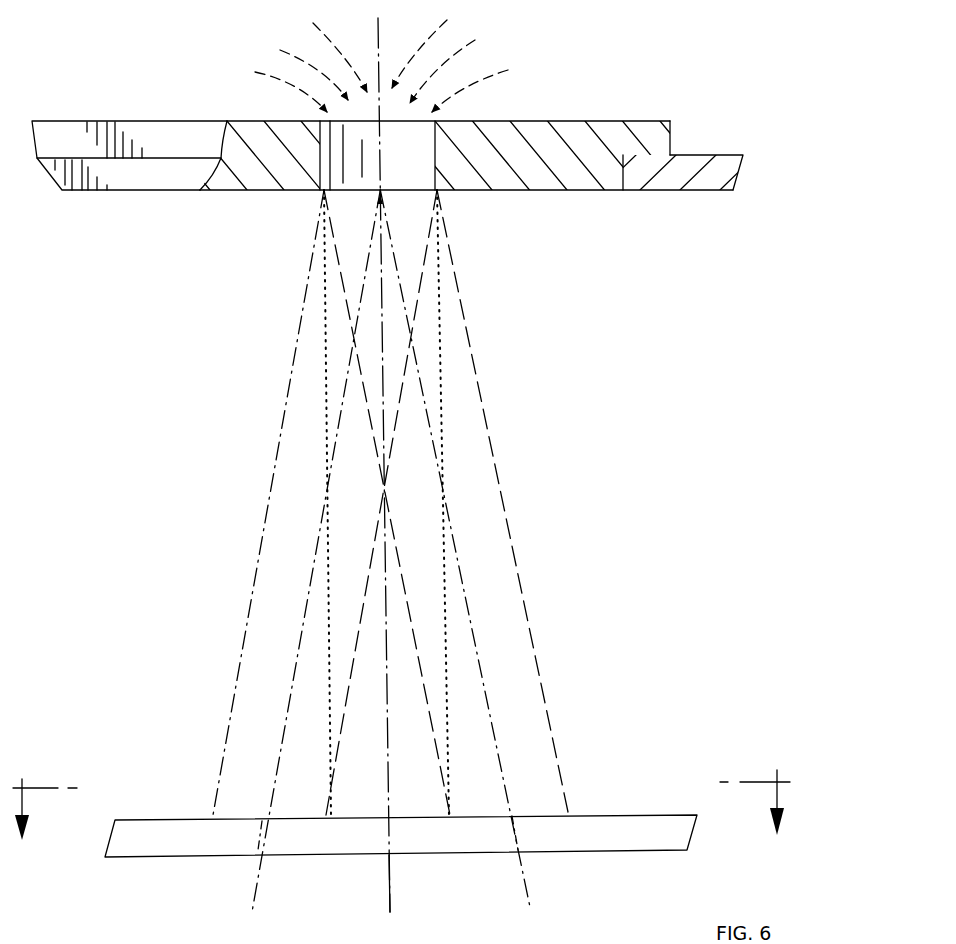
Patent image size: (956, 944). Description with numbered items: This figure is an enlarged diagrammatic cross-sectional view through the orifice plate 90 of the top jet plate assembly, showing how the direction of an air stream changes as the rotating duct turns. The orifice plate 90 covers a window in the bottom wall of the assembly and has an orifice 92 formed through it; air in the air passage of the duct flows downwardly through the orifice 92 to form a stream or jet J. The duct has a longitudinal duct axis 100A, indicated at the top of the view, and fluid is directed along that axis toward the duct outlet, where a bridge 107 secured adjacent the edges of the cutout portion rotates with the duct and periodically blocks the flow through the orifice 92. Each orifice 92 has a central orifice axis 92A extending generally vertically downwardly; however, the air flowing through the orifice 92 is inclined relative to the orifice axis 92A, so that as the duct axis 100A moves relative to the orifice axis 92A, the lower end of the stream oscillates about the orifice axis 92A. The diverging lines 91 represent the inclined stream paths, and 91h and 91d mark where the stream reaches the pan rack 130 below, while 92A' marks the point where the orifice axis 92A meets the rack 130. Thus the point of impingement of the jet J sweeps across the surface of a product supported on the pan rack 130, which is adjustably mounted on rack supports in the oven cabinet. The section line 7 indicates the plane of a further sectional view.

The longitudinal duct axis 100A is at (172, 49).
The orifice plate 90 is at (150, 190).
The orifice 92 is at (407, 165).
The bridge 107 is at (608, 185).
The orifice axis 92A is at (453, 465).
The jet J is at (503, 528).
The charged particle beam 91 is at (297, 645).
The pan rack 130 is at (583, 830).
The beam spot (left) 91h is at (257, 821).
The beam spot (right) 91d is at (524, 815).
The projected axis position 92A' is at (430, 883).
The section line 7- 7 is at (399, 799).